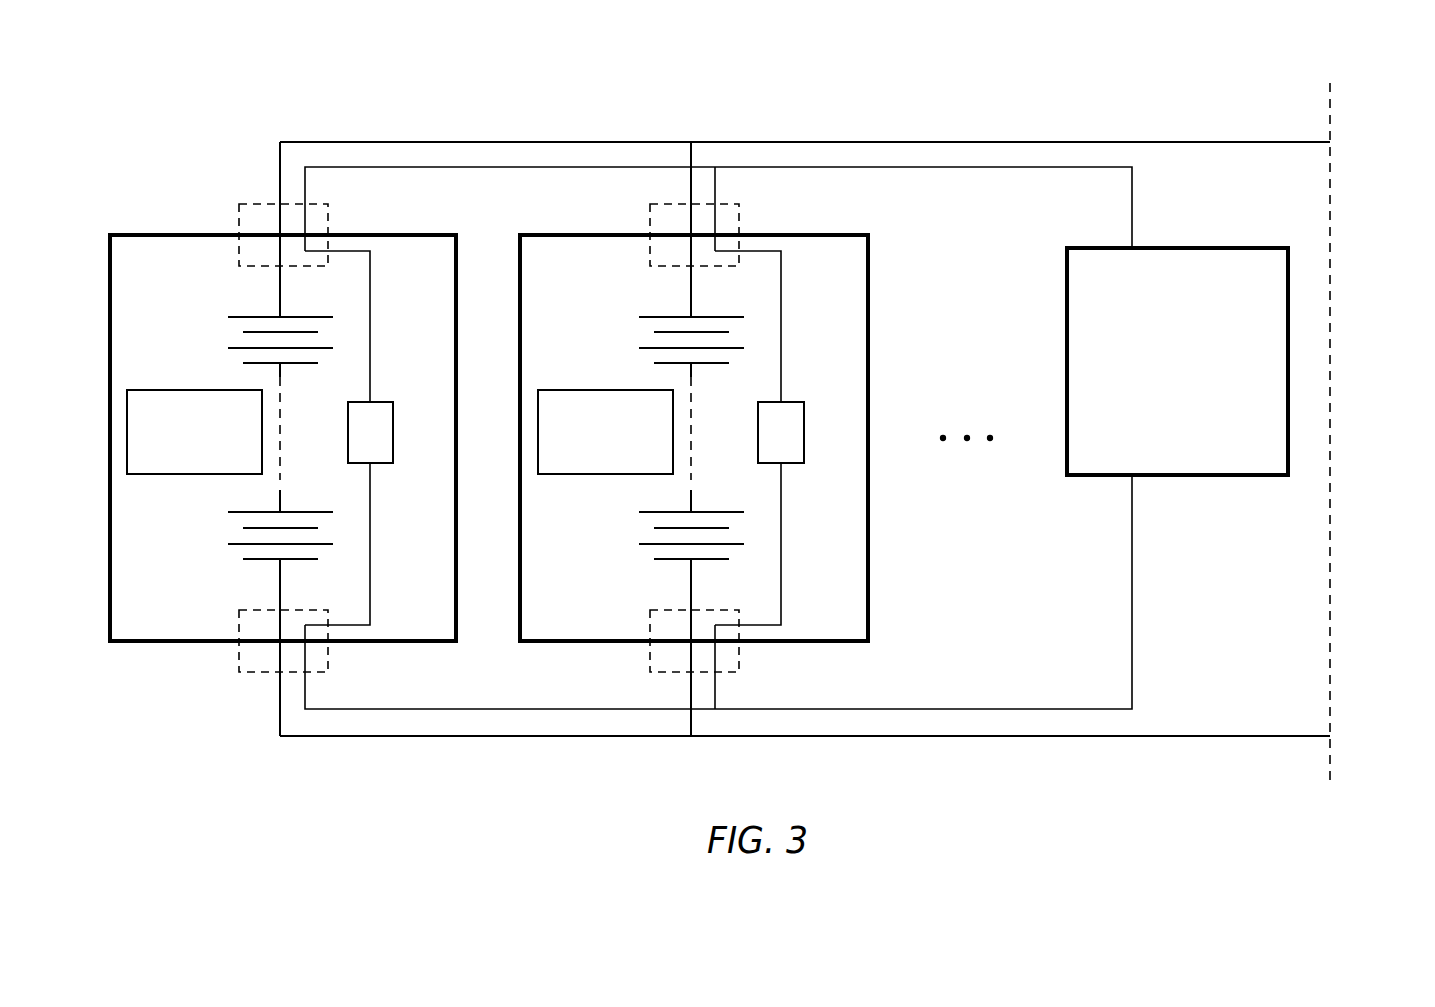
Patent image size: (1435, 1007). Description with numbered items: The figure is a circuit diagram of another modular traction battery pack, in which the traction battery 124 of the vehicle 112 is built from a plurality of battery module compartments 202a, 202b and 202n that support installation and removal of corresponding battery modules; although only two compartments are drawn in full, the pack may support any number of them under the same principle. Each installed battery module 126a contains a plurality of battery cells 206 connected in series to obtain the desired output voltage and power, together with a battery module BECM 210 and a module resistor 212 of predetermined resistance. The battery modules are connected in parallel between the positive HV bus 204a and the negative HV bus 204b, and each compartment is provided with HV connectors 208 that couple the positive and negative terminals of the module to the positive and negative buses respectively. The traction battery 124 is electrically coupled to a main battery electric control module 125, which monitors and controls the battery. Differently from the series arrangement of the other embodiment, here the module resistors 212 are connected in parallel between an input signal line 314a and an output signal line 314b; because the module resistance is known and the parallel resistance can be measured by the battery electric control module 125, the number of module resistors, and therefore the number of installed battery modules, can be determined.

The traction battery 124 is at (776, 110).
The vehicle 112 is at (1414, 461).
The battery electric control module 125 is at (1197, 406).
The battery module 126a is at (207, 574).
The battery module compartment 202a is at (145, 233).
The battery module compartment 202b is at (830, 233).
The battery module compartment 202n is at (967, 401).
The positive HV bus 204a is at (1155, 102).
The negative HV bus 204b is at (1155, 771).
The battery cells 206 is at (245, 316).
The HV connectors 208 is at (257, 203).
The battery module BECM 210 is at (162, 390).
The module resistor 212 is at (380, 401).
The input signal line 314a is at (1135, 183).
The output signal line 314b is at (1135, 603).